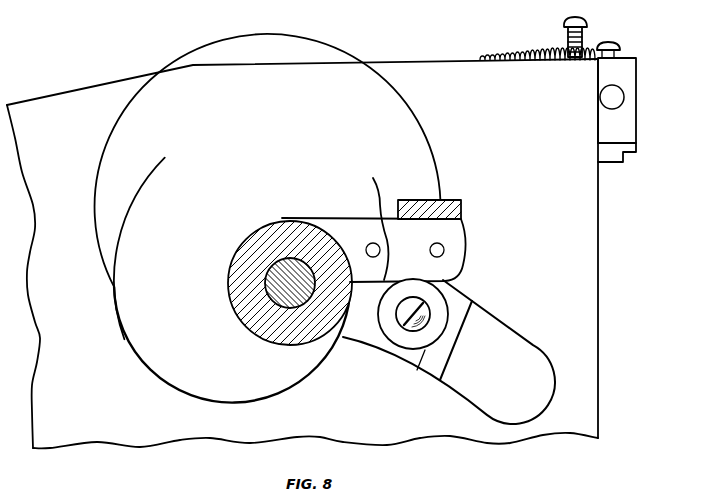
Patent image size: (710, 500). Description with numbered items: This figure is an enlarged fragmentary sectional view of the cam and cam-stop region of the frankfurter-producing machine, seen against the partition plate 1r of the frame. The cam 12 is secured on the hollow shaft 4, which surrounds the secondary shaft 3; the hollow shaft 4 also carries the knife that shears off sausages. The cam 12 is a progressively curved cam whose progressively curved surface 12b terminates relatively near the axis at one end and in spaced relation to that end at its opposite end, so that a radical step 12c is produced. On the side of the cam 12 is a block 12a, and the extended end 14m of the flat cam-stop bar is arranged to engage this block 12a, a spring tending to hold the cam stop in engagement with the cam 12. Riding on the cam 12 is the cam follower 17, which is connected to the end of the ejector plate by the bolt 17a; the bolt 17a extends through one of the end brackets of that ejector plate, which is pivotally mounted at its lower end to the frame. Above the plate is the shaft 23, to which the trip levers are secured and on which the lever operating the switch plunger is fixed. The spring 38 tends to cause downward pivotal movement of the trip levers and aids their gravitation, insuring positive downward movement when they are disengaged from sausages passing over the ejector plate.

The partition plate 1r is at (68, 98).
The cam 12 is at (377, 144).
The block 12a is at (448, 230).
The progressively curved surface 12b is at (152, 172).
The radical step 12c is at (373, 178).
The extended end 14m is at (432, 200).
The secondary shaft 3 is at (268, 293).
The hollow shaft 4 is at (280, 332).
The cam follower 17 is at (438, 312).
The bolt 17a is at (408, 328).
The shaft 23 is at (615, 93).
The spring 38 is at (522, 56).